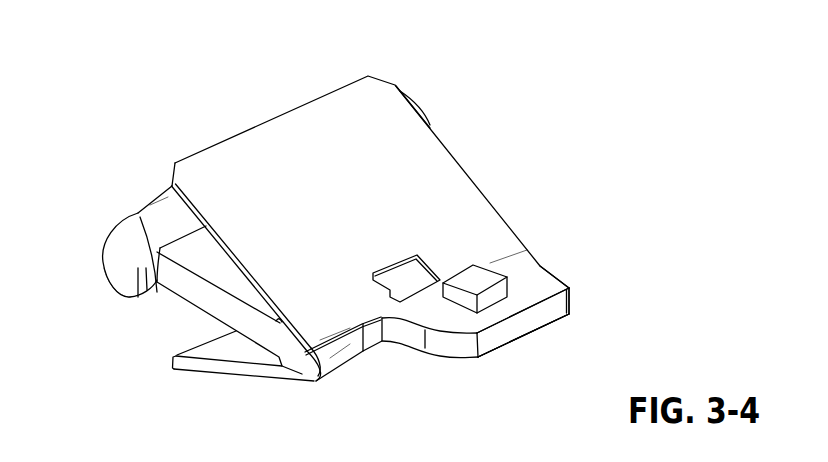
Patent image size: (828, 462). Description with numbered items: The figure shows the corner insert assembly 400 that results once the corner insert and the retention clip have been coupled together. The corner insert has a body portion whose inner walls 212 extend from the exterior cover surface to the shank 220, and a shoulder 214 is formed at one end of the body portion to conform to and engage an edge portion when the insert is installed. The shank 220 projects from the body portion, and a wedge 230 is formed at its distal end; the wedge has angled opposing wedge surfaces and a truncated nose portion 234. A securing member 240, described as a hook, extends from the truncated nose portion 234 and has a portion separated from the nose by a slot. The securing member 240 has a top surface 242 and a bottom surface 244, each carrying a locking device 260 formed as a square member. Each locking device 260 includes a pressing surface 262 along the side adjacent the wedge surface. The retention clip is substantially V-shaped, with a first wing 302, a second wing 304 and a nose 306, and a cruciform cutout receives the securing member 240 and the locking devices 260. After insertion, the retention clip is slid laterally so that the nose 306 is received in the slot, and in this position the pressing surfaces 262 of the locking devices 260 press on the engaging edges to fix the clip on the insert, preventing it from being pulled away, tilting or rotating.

The corner insert assembly 400 is at (367, 58).
The first wing 302 is at (446, 170).
The inner walls 212 is at (153, 215).
The shoulder 214 is at (147, 288).
The shank 220 is at (191, 301).
The second wing 304 is at (200, 355).
The wedge 230 is at (298, 368).
The truncated nose portion 234 is at (372, 335).
The nose 306 is at (338, 345).
The pressing surface 262 is at (463, 265).
The locking device 260 is at (484, 280).
The top surface 242 is at (528, 292).
The securing member 240 is at (584, 305).
The bottom surface 244 is at (524, 330).